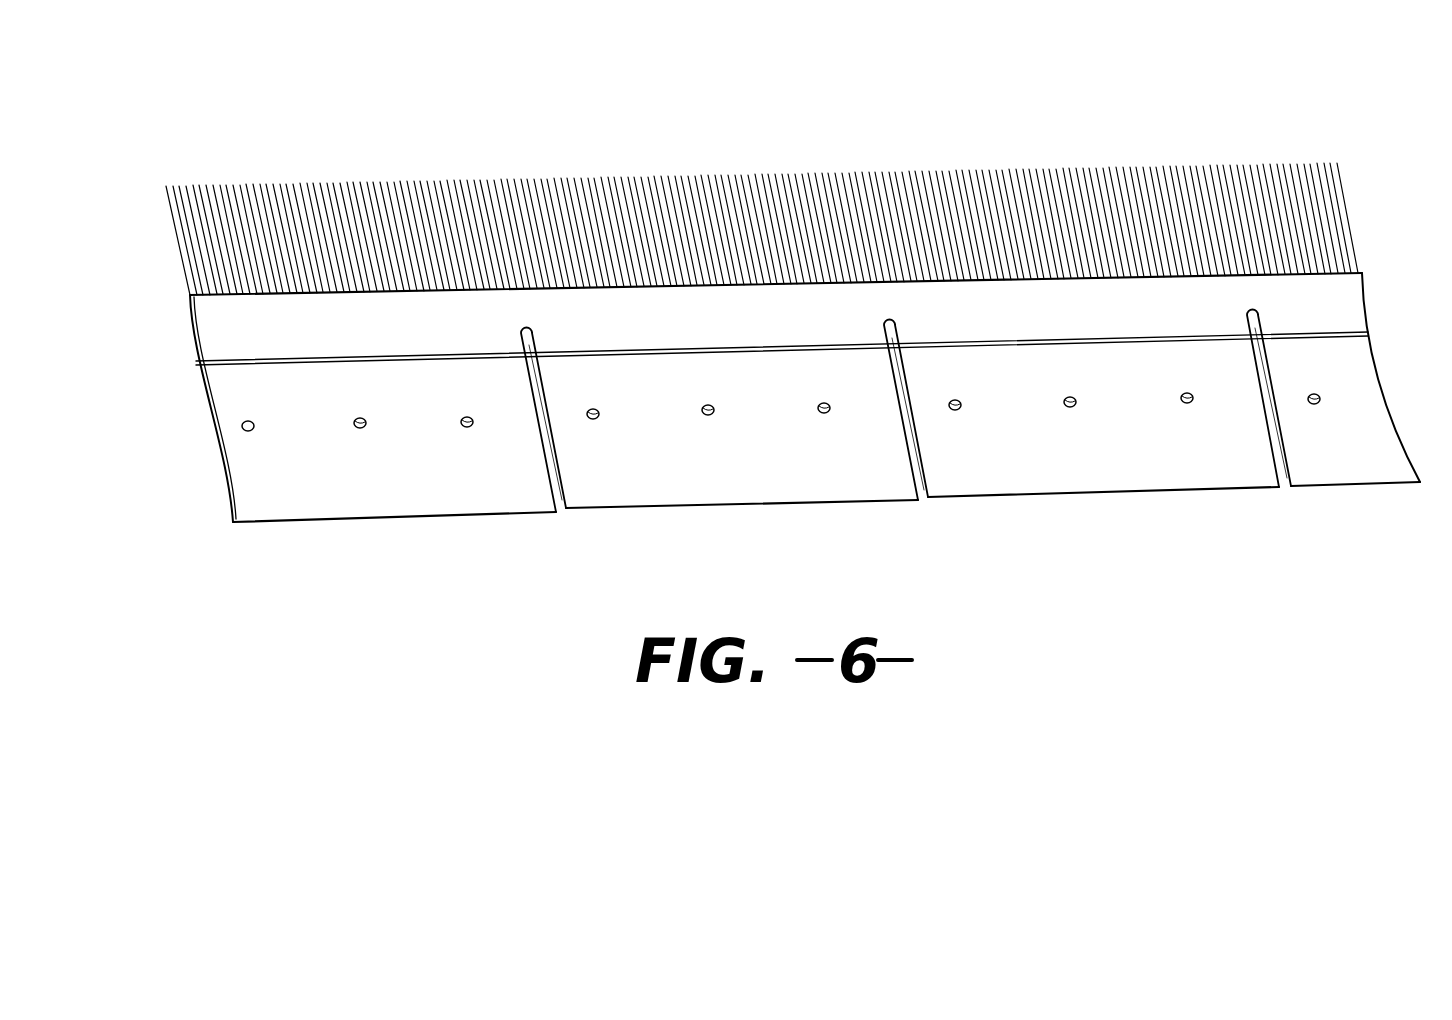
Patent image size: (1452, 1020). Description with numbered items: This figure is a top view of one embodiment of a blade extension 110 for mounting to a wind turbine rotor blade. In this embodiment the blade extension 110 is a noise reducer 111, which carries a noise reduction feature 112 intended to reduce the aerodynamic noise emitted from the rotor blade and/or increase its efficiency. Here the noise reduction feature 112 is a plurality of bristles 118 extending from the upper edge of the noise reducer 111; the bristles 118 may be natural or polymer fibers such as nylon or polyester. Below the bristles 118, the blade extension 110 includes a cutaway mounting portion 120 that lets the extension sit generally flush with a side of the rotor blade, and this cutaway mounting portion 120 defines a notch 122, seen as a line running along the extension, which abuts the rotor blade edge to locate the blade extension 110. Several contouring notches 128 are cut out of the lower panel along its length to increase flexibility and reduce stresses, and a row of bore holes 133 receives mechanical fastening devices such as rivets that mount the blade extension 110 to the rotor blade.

The blade extension 110 is at (1172, 537).
The noise reducer 111 is at (1332, 272).
The noise reduction feature 112 is at (1380, 208).
The bristles 118 is at (728, 168).
The cutaway mounting portion 120 is at (245, 473).
The notch 122 is at (242, 364).
The contouring notches 128 is at (563, 515).
The bore holes 133 is at (477, 434).